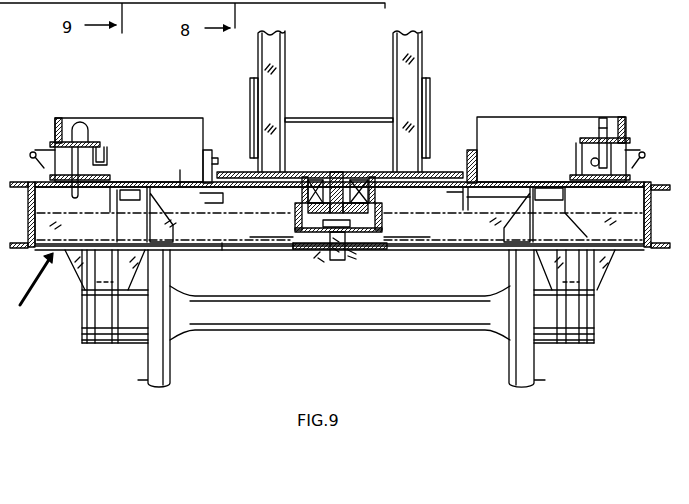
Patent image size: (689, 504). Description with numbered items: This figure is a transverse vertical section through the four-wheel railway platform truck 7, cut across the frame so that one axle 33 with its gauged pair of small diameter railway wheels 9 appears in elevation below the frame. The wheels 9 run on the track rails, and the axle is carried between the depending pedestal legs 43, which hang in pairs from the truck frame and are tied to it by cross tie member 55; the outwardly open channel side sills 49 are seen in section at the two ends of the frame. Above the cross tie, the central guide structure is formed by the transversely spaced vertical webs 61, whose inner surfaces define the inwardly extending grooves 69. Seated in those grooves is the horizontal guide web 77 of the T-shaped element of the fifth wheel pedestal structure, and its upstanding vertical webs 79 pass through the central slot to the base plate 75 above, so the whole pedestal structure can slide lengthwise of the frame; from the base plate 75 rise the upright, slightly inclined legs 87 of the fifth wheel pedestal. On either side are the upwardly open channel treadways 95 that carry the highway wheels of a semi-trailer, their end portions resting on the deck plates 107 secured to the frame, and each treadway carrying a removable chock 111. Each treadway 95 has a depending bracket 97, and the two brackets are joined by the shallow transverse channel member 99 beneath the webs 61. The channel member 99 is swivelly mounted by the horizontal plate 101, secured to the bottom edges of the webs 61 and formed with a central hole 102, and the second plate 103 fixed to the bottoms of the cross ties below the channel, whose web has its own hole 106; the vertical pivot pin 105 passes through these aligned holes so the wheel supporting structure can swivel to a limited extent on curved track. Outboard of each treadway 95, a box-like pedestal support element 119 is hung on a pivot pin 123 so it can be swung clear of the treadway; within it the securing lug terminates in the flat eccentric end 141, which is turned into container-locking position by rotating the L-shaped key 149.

The railway platform truck 7 is at (28, 295).
The wheels 9 is at (147, 360).
The axles 33 is at (327, 323).
The pedestal legs 43 is at (83, 310).
The side sills 49 is at (28, 230).
The cross tie member 55 is at (624, 248).
The webs 61 is at (300, 172).
The grooves 69 is at (285, 216).
The base plate 75 is at (445, 130).
The horizontal guide web 77 is at (297, 195).
The vertical webs 79 is at (337, 180).
The legs 87 is at (284, 58).
The treadways 95 is at (210, 150).
The bracket 97 is at (115, 219).
The channel member 99 is at (222, 243).
The horizontal plate 101 is at (385, 241).
The hole 102 is at (293, 242).
The second plate 103 is at (312, 252).
The vertical pivot pin 105 is at (333, 262).
The hole 106 is at (363, 248).
The deck plates 107 is at (180, 186).
The removable chock 111 is at (143, 155).
The pedestal support element 119 is at (98, 141).
The pivot pin 123 is at (32, 152).
The eccentric end 141 is at (72, 124).
The key 149 is at (105, 163).